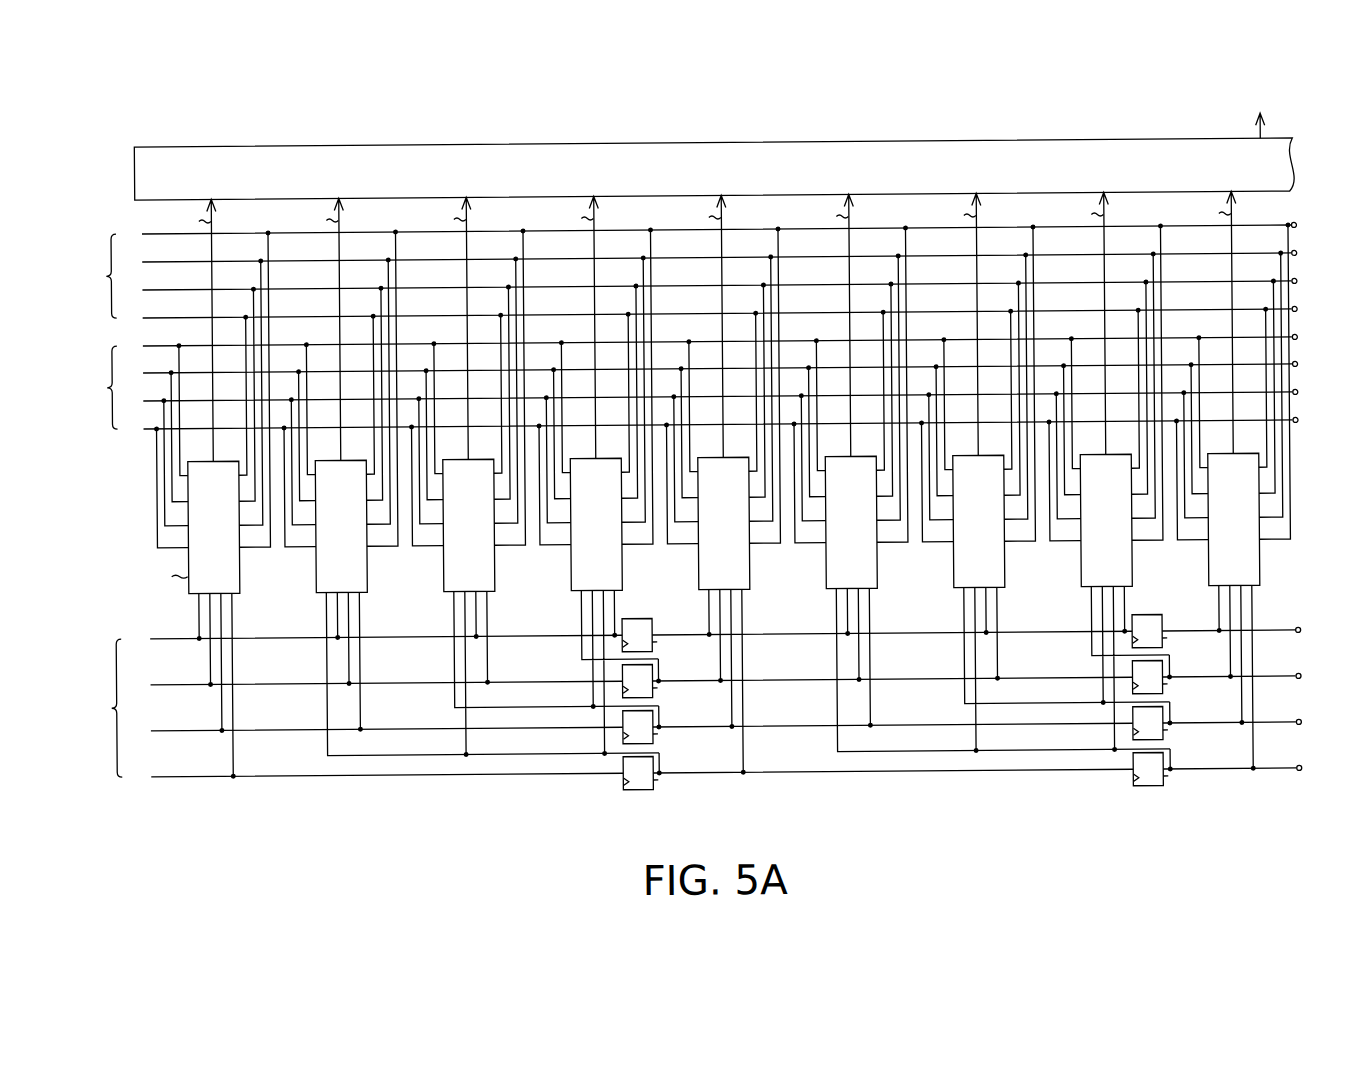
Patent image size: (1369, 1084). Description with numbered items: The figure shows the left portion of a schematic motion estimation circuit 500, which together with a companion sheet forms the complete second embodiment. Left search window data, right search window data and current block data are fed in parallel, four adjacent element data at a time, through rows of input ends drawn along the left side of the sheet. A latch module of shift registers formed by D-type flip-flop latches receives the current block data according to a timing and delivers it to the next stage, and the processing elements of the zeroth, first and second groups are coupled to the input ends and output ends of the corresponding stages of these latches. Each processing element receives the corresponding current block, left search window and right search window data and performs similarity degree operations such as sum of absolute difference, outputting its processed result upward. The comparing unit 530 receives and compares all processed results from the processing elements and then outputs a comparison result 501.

The motion estimation circuit 500 is at (707, 468).
The comparing unit 530 is at (135, 172).
The comparison result 501 is at (1261, 110).